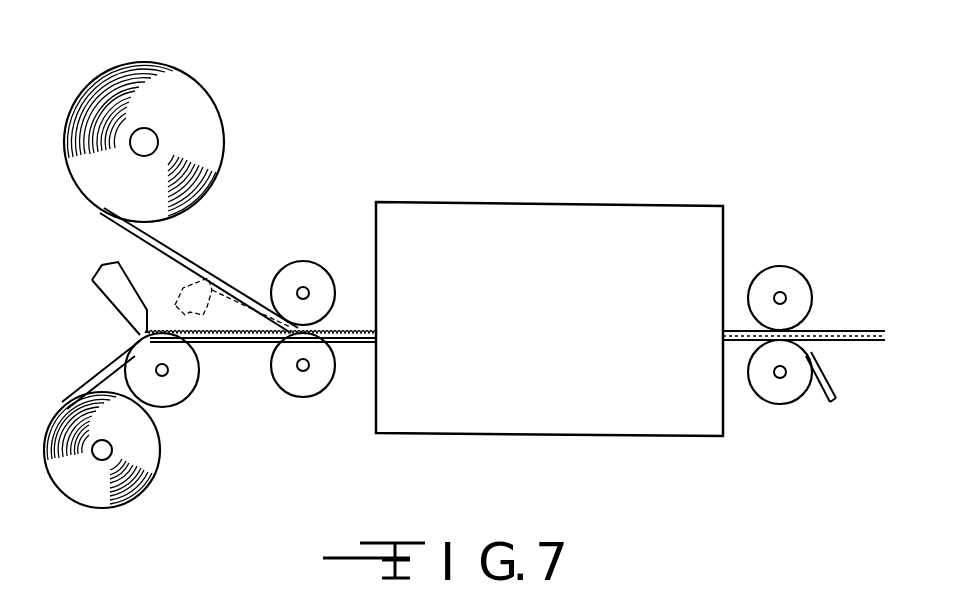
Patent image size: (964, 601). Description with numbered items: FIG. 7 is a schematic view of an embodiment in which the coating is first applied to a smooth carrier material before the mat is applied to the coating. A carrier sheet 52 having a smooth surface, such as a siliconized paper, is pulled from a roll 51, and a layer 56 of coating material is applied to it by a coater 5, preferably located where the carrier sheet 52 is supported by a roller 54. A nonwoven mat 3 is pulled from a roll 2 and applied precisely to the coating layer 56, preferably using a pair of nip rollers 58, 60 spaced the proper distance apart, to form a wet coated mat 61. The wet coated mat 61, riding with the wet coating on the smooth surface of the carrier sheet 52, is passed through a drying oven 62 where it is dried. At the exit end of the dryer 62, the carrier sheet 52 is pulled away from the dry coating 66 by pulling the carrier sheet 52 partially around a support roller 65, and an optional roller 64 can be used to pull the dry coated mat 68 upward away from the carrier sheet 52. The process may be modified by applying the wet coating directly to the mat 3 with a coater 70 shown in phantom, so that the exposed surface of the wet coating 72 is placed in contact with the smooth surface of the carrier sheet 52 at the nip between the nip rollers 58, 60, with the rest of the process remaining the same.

The roll 2 is at (172, 92).
The mat 3 is at (182, 250).
The coater 5 is at (112, 304).
The roll 51 is at (75, 480).
The carrier sheet 52 is at (85, 378).
The roller 54 is at (178, 390).
The layer of coating material 56 is at (180, 330).
The nip roller 58 is at (302, 272).
The nip roller 60 is at (303, 396).
The wet coated mat 61 is at (355, 334).
The drying oven 62 is at (448, 222).
The roller 64 is at (765, 288).
The support roller 65 is at (768, 384).
The dry coating 66 is at (818, 342).
The dry coated mat 68 is at (850, 333).
The coater 70 is at (193, 292).
The wet coating 72 is at (248, 308).